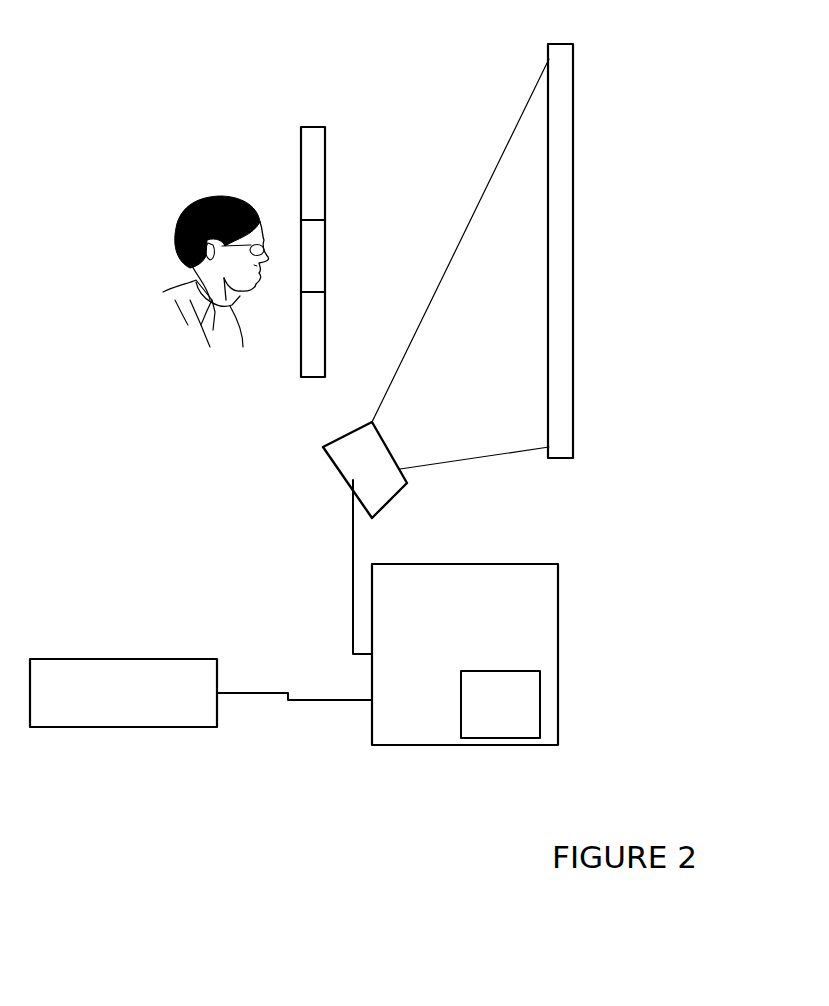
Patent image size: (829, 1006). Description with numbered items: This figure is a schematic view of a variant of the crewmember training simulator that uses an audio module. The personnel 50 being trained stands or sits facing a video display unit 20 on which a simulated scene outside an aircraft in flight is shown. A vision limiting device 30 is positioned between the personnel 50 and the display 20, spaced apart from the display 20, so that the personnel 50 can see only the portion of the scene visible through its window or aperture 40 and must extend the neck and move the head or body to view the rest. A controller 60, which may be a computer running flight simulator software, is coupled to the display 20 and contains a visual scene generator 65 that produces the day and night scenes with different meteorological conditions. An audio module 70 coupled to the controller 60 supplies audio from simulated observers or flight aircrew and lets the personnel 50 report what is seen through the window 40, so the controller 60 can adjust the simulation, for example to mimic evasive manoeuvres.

The video display unit 20 is at (573, 173).
The vision limiting device 30 is at (300, 150).
The window or aperture 40 is at (325, 255).
The personnel 50 is at (190, 195).
The controller 60 is at (512, 564).
The visual scene generator 65 is at (500, 704).
The audio module 70 is at (170, 659).